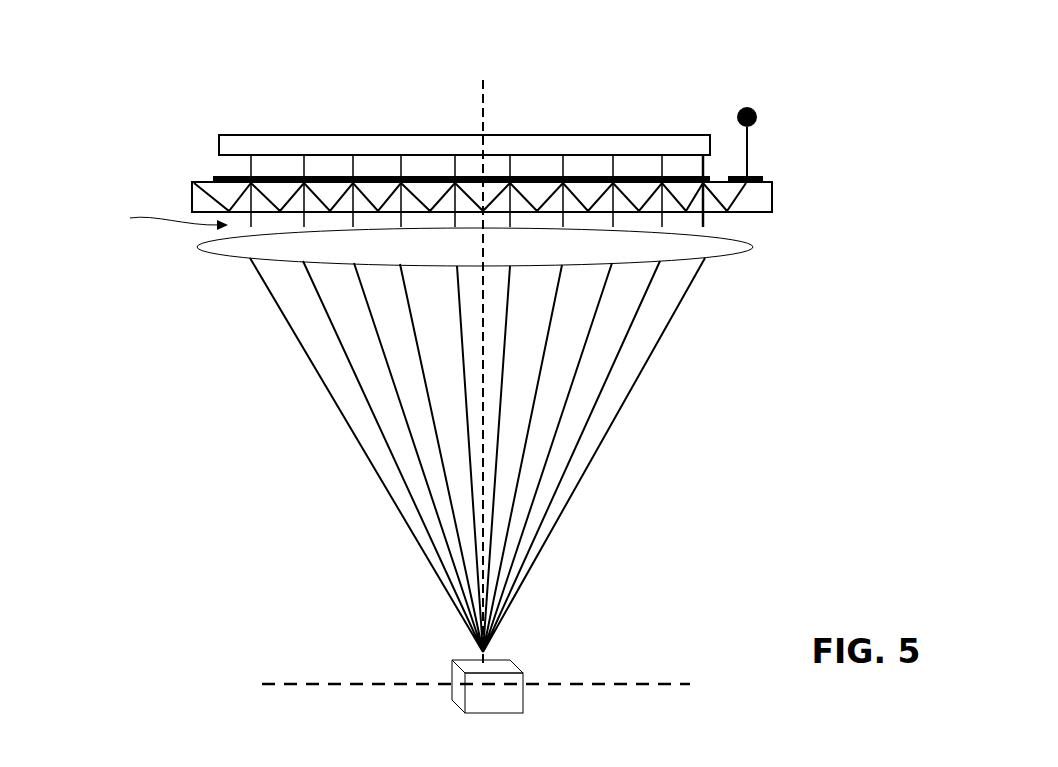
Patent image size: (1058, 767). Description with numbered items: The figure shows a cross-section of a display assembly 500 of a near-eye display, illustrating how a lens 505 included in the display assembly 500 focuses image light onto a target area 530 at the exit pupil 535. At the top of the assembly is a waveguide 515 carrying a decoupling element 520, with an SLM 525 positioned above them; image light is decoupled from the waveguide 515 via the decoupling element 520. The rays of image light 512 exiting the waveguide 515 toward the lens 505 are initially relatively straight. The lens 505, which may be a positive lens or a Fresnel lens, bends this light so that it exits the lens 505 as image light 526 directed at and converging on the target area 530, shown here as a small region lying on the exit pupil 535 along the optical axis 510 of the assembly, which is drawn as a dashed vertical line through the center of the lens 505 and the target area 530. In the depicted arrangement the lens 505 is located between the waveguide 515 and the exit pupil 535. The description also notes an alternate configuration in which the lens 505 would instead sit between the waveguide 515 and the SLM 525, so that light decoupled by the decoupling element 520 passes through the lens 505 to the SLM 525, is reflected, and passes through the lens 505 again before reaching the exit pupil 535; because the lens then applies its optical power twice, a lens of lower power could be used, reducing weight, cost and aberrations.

The display assembly 500 is at (176, 114).
The lens 505 is at (197, 247).
The optical axis 510 is at (483, 652).
The image light 512 is at (140, 214).
The waveguide 515 is at (772, 212).
The decoupling element 520 is at (214, 177).
The SLM 525 is at (622, 135).
The image light 526 is at (358, 448).
The target area 530 is at (452, 660).
The exit pupil 535 is at (277, 683).